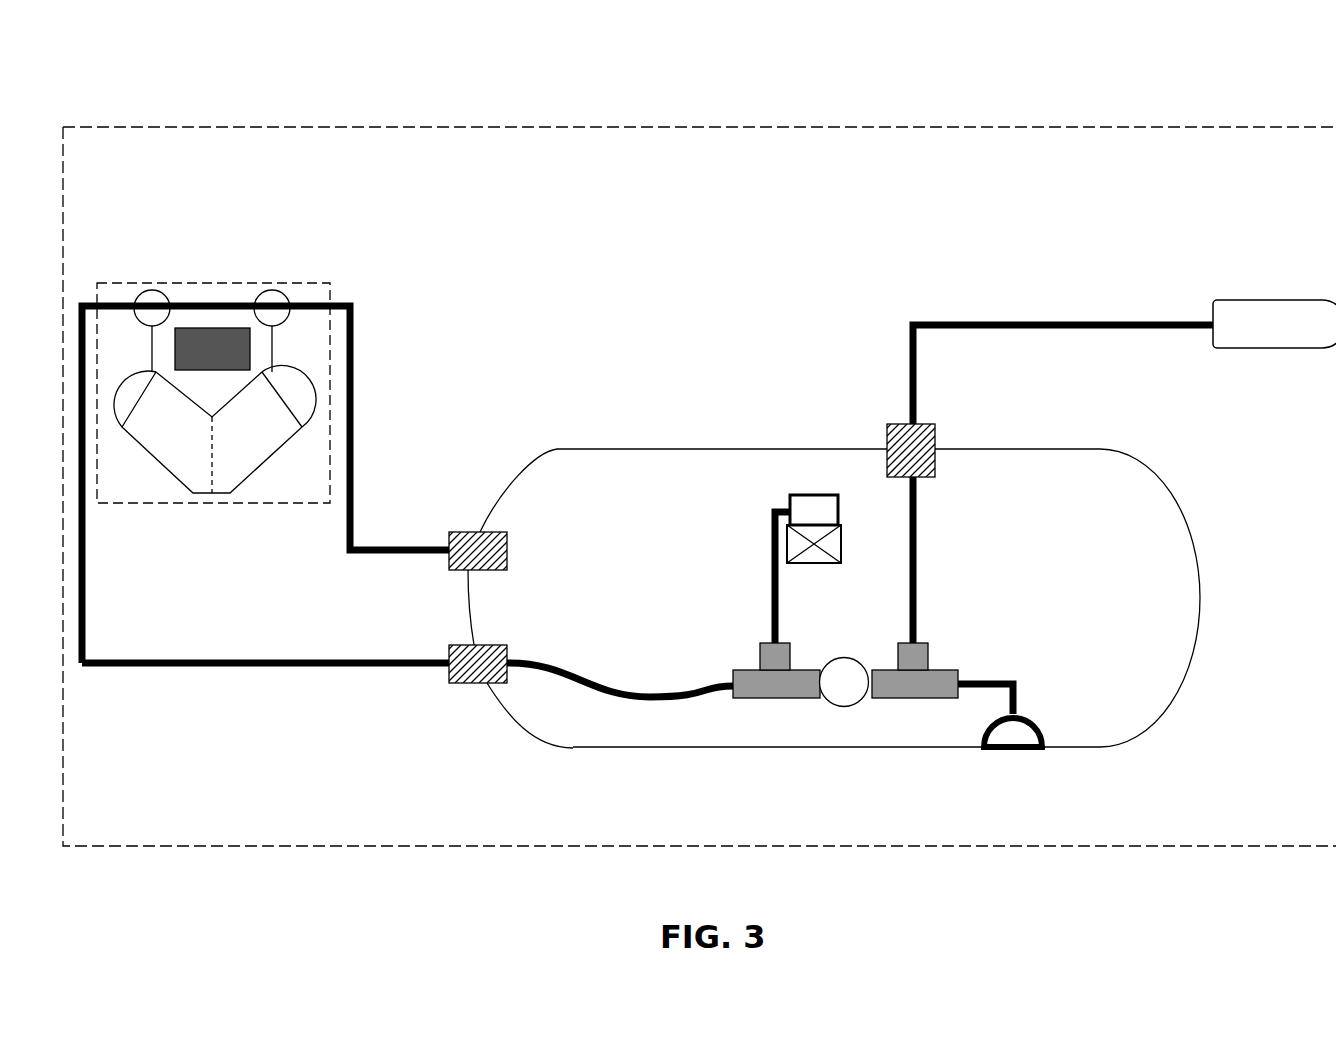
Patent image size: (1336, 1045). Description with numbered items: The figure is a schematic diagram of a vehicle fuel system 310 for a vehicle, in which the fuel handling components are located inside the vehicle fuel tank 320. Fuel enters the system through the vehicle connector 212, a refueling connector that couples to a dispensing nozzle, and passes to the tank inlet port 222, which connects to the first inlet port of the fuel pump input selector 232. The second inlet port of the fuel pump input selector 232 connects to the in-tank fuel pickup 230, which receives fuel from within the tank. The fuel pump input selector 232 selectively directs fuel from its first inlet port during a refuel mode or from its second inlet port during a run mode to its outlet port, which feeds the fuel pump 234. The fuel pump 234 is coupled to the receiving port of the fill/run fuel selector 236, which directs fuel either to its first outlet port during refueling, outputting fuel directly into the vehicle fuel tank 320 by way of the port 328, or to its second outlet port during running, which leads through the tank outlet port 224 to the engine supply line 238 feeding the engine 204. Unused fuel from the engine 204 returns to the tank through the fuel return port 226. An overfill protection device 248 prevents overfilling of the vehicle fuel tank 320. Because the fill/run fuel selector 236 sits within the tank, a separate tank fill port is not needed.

The vehicle fuel system 310 is at (615, 127).
The engine 204 is at (295, 283).
The engine supply line 238 is at (86, 594).
The vehicle fuel tank 320 is at (648, 449).
The fuel return port 226 is at (466, 532).
The tank outlet port 224 is at (478, 683).
The tank inlet port 222 is at (935, 430).
The fill/run fuel selector 236 is at (760, 658).
The port 328 is at (808, 495).
The overfill protection device 248 is at (841, 527).
The fuel pump 234 is at (845, 707).
The fuel pump input selector 232 is at (930, 658).
The in-tank fuel pickup 230 is at (1042, 730).
The vehicle connector 212 is at (1287, 300).